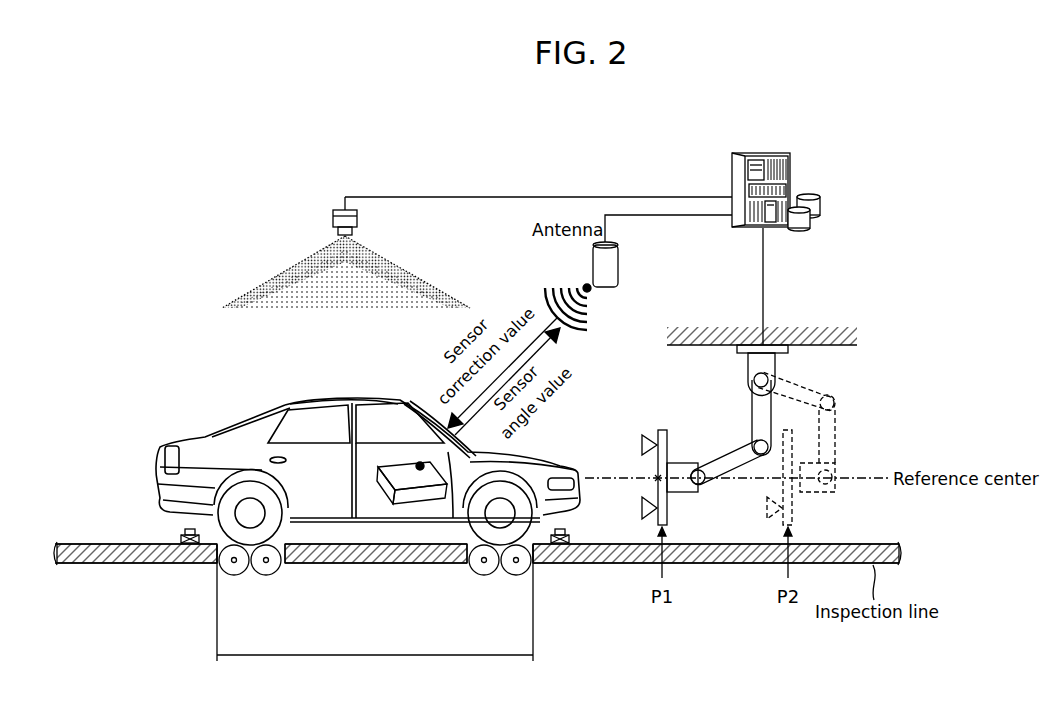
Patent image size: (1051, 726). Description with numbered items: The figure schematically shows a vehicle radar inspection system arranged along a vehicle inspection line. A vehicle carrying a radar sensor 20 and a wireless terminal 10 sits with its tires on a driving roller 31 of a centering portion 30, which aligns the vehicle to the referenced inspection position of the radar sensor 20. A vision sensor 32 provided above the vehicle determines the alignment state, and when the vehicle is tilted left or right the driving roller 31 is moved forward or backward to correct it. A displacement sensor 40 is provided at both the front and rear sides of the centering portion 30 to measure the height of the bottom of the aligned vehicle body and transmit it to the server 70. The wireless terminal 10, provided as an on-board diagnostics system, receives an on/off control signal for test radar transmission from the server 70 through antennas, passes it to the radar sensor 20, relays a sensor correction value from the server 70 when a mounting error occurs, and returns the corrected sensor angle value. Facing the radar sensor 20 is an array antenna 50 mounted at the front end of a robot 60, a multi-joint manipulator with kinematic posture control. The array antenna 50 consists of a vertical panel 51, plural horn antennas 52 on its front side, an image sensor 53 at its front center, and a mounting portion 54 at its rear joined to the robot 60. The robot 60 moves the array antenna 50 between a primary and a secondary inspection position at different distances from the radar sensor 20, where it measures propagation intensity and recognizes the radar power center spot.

The wireless terminal 10 is at (418, 463).
The radar sensor 20 is at (573, 463).
The centering portion 30 is at (400, 655).
The driving roller 31 is at (270, 572).
The vision sensor 32 is at (333, 217).
The displacement sensor 40 is at (190, 563).
The array antenna 50 is at (655, 451).
The vertical panel 51 is at (668, 443).
The horn antennas 52 is at (642, 443).
The image sensor 53 is at (657, 477).
The mounting portion 54 is at (668, 496).
The robot 60 is at (778, 412).
The server 70 is at (772, 152).